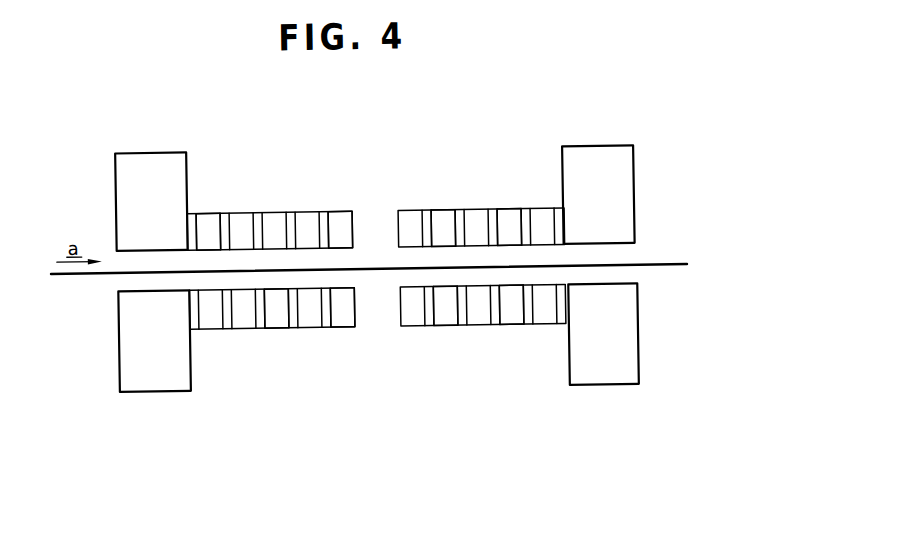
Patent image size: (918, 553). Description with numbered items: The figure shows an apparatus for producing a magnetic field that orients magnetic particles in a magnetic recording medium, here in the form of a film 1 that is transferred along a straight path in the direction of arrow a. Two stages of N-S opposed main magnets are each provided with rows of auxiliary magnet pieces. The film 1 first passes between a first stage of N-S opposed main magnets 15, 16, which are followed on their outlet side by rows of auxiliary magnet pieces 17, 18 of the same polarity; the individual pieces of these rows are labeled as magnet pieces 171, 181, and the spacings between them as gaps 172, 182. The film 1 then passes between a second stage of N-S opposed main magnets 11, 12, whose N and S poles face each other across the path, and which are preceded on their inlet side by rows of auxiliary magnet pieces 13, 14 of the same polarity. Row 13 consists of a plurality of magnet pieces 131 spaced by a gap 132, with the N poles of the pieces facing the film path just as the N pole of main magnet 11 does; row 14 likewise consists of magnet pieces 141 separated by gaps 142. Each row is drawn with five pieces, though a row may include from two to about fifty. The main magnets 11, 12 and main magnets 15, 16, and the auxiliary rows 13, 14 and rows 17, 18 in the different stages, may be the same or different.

The film 1 is at (662, 268).
The main magnet 11 is at (627, 346).
The main magnet 12 is at (628, 192).
The auxiliary magnet row 13 is at (483, 357).
The magnet piece 131 is at (502, 325).
The gap 132 is at (462, 320).
The auxiliary magnet row 14 is at (478, 171).
The magnet piece 141 is at (469, 210).
The small magnet 142 is at (528, 210).
The main magnet 15 is at (129, 380).
The main magnet 16 is at (124, 154).
The auxiliary magnet row 17 is at (276, 372).
The small magnet 171 is at (333, 326).
The small magnet 172 is at (292, 319).
The auxiliary magnet row 18 is at (273, 175).
The small magnet 181 is at (318, 209).
The small magnet 182 is at (224, 218).